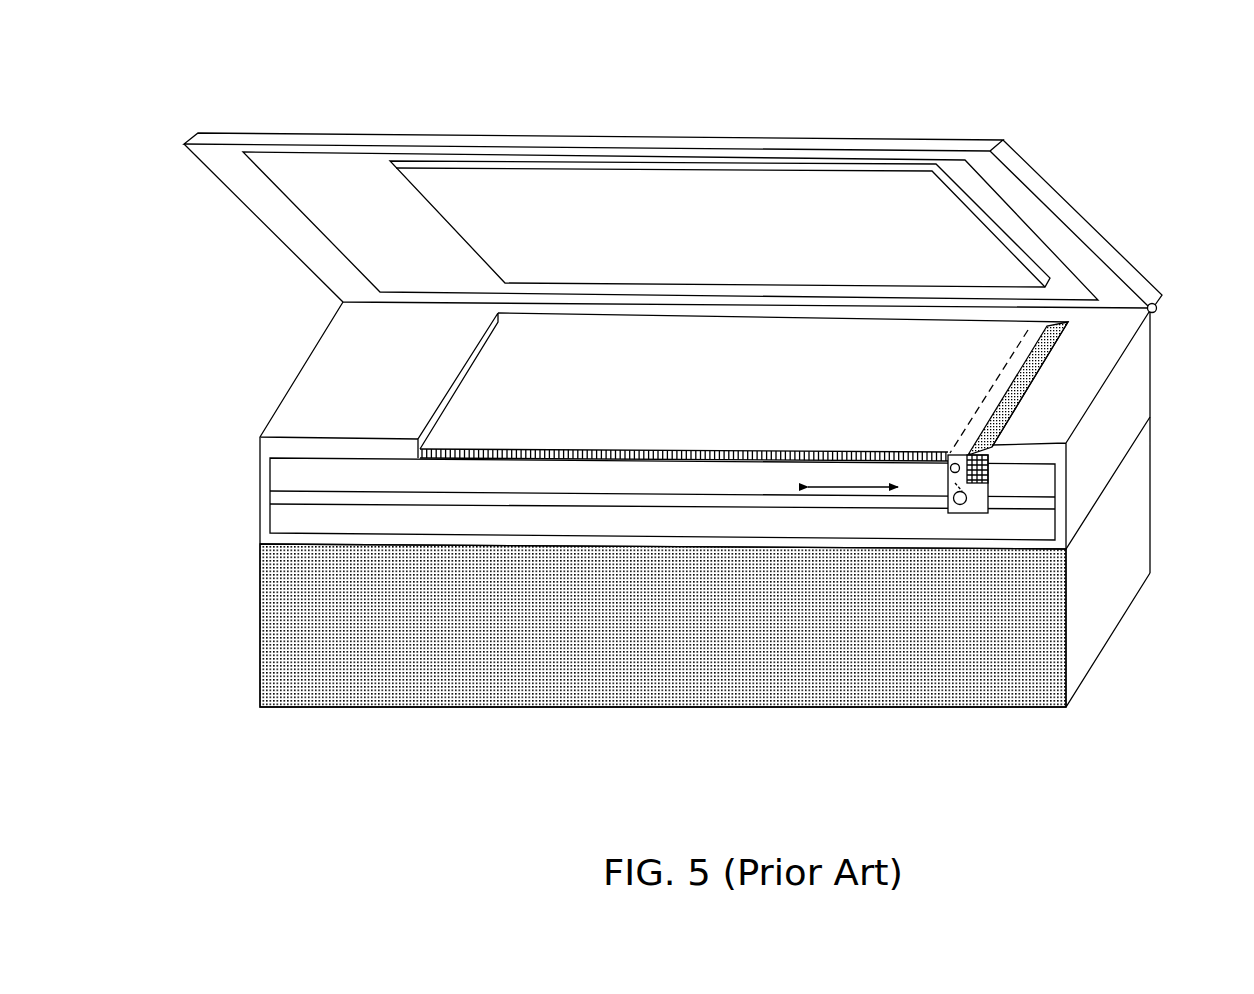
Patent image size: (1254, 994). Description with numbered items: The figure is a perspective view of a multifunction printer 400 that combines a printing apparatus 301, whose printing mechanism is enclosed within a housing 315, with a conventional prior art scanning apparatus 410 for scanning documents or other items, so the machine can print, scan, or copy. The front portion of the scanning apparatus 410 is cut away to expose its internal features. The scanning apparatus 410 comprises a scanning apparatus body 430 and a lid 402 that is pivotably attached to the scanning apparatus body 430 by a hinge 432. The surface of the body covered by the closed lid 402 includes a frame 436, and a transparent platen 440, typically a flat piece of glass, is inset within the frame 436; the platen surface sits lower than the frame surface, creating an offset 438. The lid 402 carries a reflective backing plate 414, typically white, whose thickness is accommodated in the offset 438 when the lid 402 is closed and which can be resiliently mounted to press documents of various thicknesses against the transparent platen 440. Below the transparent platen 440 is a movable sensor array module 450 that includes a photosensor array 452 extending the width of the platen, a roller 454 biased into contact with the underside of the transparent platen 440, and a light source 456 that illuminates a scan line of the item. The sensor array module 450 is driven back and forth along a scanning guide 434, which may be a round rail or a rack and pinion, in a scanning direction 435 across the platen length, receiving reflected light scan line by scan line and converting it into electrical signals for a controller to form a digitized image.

The multifunction printer 400 is at (355, 63).
The lid 402 is at (1070, 214).
The reflective backing plate 414 is at (551, 178).
The hinge 432 is at (1158, 309).
The scanning apparatus 410 is at (236, 429).
The frame 436 is at (357, 408).
The offset 438 is at (484, 344).
The transparent platen 440 is at (510, 388).
The scanning apparatus body 430 is at (268, 463).
The scanning guide 434 is at (283, 497).
The scanning direction 435 is at (855, 488).
The sensor array module 450 is at (990, 512).
The photosensor array 452 is at (980, 489).
The roller 454 is at (952, 462).
The light source 456 is at (962, 505).
The printing apparatus 301 is at (234, 603).
The housing 315 is at (257, 677).